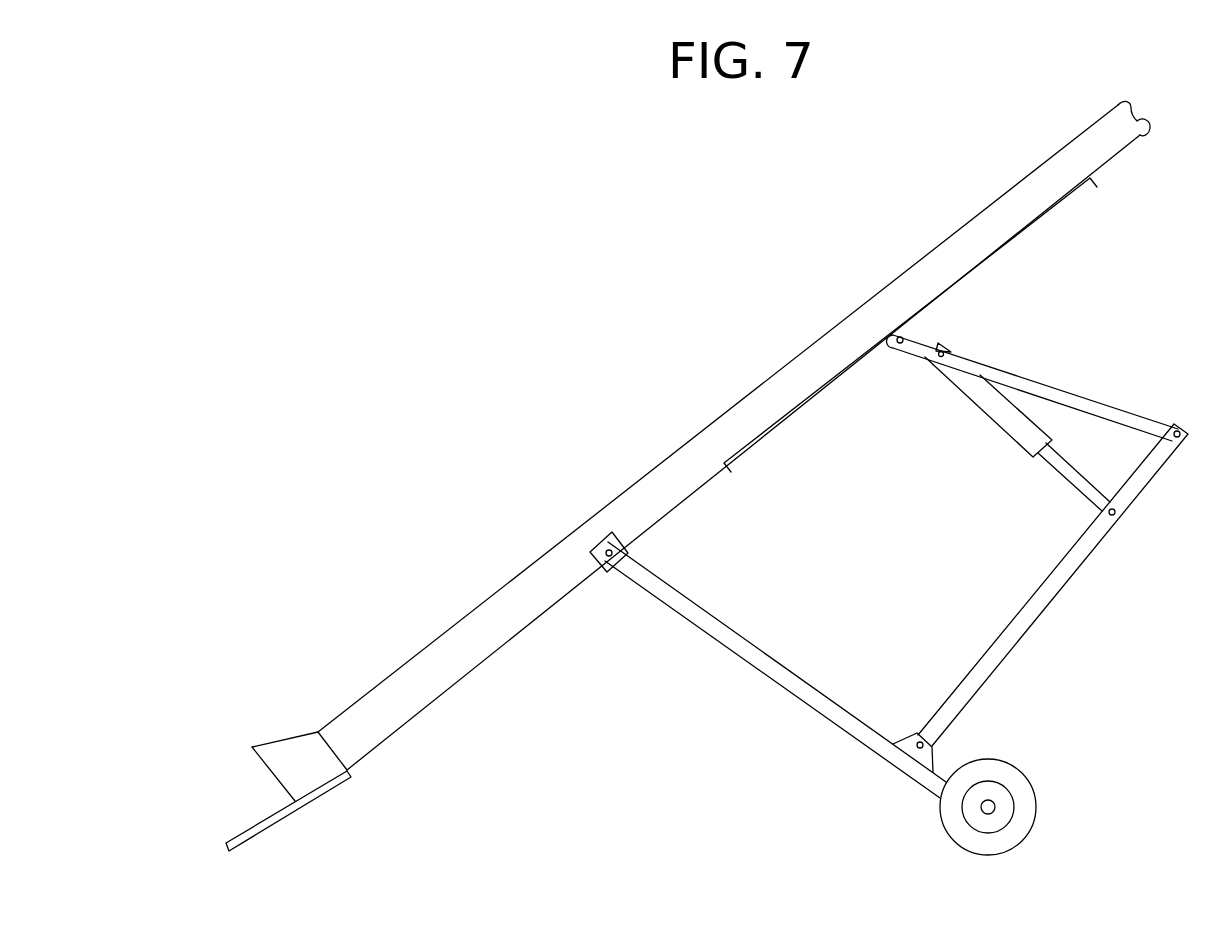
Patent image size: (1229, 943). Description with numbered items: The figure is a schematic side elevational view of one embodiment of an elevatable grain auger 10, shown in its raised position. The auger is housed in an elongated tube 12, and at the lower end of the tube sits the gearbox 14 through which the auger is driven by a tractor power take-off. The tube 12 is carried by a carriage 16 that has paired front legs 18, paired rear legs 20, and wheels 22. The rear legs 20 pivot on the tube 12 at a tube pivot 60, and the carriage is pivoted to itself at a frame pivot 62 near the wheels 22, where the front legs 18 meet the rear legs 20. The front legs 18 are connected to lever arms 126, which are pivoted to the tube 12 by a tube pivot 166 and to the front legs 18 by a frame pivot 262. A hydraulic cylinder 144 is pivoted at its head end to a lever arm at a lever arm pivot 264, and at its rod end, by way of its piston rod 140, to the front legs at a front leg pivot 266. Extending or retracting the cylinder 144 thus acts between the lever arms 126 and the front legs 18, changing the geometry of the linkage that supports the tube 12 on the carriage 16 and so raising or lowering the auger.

The elevatable grain auger 10 is at (696, 413).
The elongated tube 12 is at (488, 618).
The gearbox 14 is at (292, 768).
The carriage 16 is at (734, 682).
The front legs 18 is at (1030, 619).
The rear legs 20 is at (813, 690).
The wheels 22 is at (1017, 781).
The tube pivot 60 is at (605, 566).
The frame pivot 62 is at (920, 742).
The lever arms 126 is at (1056, 394).
The piston rod 140 is at (1073, 477).
The cylinder 144 is at (1000, 413).
The tube pivot 166 is at (893, 341).
The frame pivot 262 is at (1181, 432).
The lever arm pivot 264 is at (950, 350).
The front leg pivot 266 is at (1114, 516).